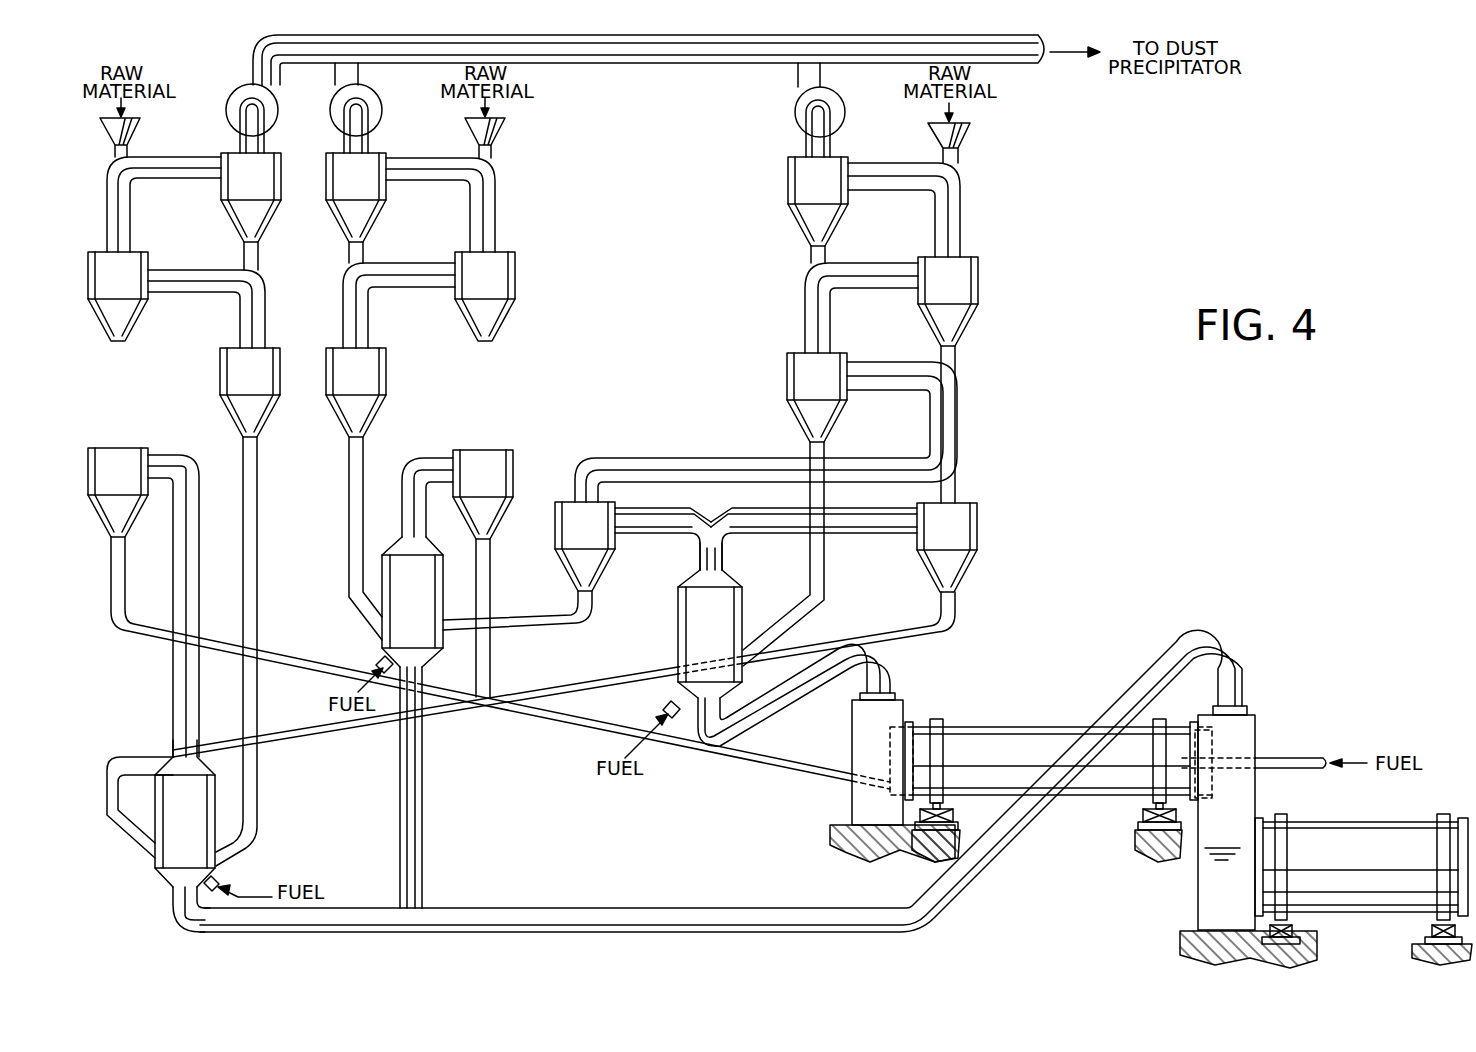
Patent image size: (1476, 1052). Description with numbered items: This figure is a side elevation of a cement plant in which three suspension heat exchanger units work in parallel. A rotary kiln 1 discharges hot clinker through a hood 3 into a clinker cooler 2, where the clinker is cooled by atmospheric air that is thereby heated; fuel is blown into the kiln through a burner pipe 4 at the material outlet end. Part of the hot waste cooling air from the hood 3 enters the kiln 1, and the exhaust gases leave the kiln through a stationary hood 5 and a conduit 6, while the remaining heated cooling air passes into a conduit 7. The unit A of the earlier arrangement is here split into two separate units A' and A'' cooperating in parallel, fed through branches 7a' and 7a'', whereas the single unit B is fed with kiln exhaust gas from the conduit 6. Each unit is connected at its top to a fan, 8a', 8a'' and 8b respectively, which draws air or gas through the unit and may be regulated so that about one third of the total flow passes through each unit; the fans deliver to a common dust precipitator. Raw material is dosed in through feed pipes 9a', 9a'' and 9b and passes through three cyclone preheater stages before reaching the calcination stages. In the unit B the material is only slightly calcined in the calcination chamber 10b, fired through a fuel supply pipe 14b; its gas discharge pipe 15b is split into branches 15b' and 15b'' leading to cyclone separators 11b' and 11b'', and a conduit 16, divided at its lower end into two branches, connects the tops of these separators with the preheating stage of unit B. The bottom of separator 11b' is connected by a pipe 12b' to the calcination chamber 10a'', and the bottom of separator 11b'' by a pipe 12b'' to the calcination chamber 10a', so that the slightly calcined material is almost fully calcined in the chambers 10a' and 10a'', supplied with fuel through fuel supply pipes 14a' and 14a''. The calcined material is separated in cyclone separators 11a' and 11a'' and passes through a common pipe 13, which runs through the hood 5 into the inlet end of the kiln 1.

The rotary kiln 1 is at (1005, 733).
The clinker cooler 2 is at (1372, 895).
The hood 3 is at (1245, 737).
The burner pipe 4 is at (1290, 770).
The stationary hood 5 is at (850, 797).
The conduit 6 is at (880, 662).
The conduit 7 is at (1000, 850).
The conduit branch 7a' is at (163, 916).
The conduit branch 7a'' is at (447, 787).
The fan 8a' is at (271, 118).
The fan 8a'' is at (385, 108).
The fan 8b is at (796, 112).
The feed pipe 9a' is at (147, 127).
The feed pipe 9a'' is at (516, 128).
The feed pipe 9b is at (972, 138).
The calcination chamber 10a' is at (154, 813).
The calcination chamber 10a'' is at (400, 575).
The calcination chamber 10b is at (676, 641).
The cyclone separator 11a' is at (141, 474).
The cyclone separator 11a'' is at (510, 475).
The cyclone separator 11b' is at (608, 554).
The cyclone separator 11b'' is at (985, 547).
The pipe 12b' is at (517, 600).
The pipe 12b'' is at (603, 674).
The pipe 13 is at (557, 718).
The fuel supply pipe 14a' is at (240, 870).
The fuel supply pipe 14a'' is at (358, 653).
The fuel supply pipe 14b is at (672, 703).
The gas discharge pipe 15b is at (742, 556).
The branch 15b' is at (668, 527).
The branch 15b'' is at (814, 527).
The conduit 16 is at (900, 368).
The heat exchanger unit A' is at (179, 425).
The heat exchanger unit A'' is at (469, 295).
The heat exchanger unit B is at (1008, 292).